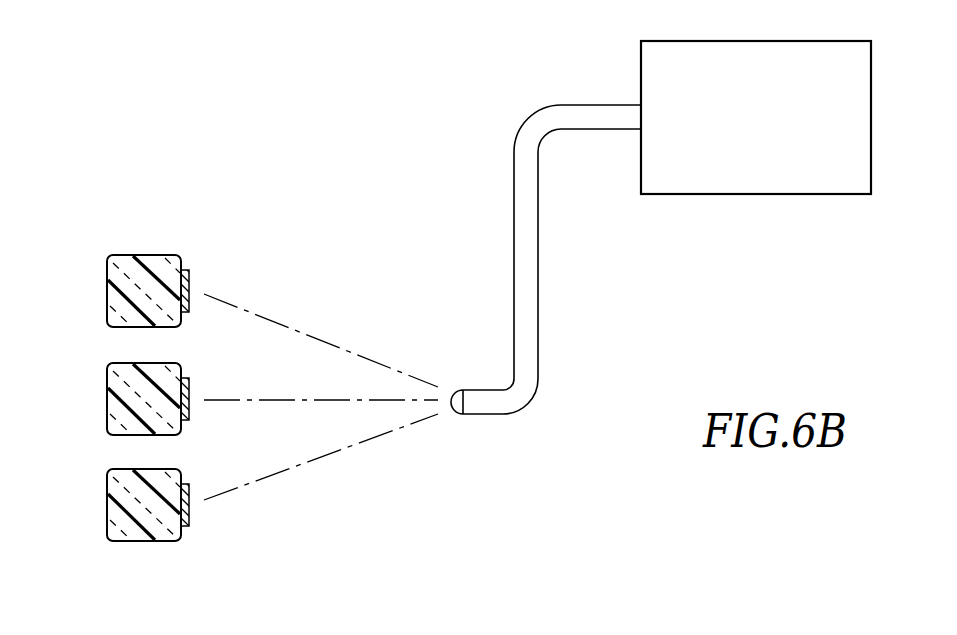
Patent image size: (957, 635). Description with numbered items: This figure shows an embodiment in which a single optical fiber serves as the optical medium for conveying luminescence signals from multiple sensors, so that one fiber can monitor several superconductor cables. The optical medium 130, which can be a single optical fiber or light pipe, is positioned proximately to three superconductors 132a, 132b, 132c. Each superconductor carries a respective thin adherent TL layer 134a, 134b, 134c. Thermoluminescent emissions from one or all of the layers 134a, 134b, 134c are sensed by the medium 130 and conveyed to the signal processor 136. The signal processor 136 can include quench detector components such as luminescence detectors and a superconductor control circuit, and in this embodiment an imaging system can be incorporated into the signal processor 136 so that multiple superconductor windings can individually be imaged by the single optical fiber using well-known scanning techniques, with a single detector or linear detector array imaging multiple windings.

The optical medium 130 is at (539, 260).
The superconductor 132a is at (107, 284).
The superconductor 132b is at (107, 392).
The superconductor 132c is at (107, 498).
The thin adherent TL layer 134a is at (190, 311).
The thin adherent TL layer 134b is at (190, 419).
The thin adherent TL layer 134c is at (190, 525).
The signal processor 136 is at (747, 41).